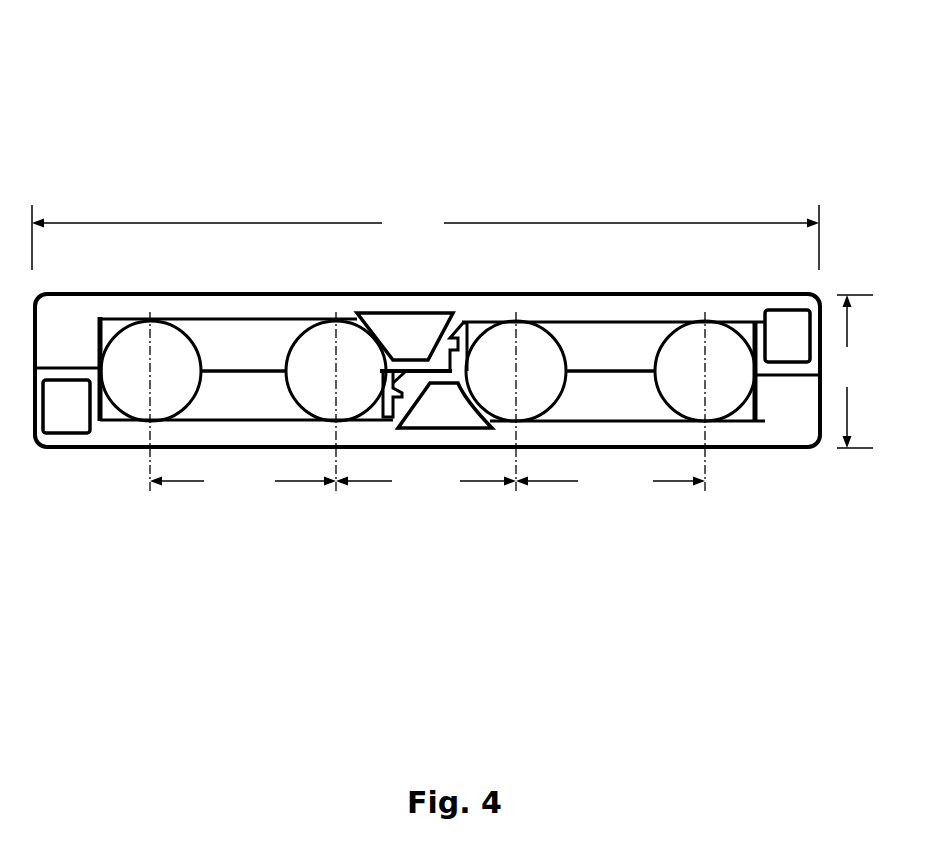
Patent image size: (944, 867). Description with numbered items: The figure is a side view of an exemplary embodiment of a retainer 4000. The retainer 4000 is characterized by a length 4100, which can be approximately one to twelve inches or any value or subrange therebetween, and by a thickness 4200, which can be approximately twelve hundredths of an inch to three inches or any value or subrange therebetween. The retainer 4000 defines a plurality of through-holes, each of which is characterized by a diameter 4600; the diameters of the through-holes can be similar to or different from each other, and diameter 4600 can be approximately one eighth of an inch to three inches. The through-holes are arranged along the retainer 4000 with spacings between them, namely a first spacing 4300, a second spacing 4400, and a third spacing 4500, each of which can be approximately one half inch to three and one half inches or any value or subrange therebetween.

The retainer 4000 is at (203, 53).
The length 4100 is at (425, 237).
The thickness 4200 is at (859, 371).
The first spacing 4300 is at (243, 481).
The second spacing 4400 is at (426, 481).
The third spacing 4500 is at (610, 481).
The diameter 4600 is at (639, 336).